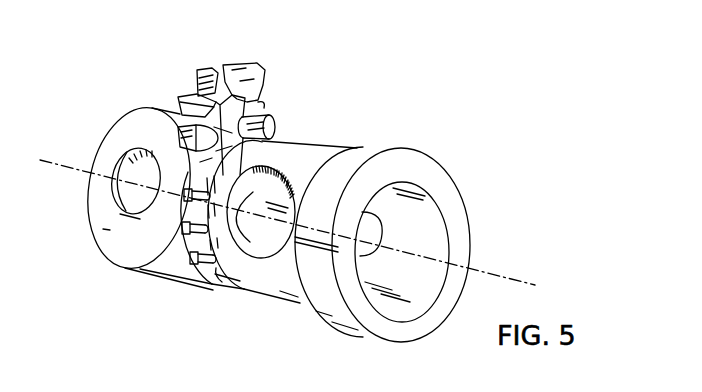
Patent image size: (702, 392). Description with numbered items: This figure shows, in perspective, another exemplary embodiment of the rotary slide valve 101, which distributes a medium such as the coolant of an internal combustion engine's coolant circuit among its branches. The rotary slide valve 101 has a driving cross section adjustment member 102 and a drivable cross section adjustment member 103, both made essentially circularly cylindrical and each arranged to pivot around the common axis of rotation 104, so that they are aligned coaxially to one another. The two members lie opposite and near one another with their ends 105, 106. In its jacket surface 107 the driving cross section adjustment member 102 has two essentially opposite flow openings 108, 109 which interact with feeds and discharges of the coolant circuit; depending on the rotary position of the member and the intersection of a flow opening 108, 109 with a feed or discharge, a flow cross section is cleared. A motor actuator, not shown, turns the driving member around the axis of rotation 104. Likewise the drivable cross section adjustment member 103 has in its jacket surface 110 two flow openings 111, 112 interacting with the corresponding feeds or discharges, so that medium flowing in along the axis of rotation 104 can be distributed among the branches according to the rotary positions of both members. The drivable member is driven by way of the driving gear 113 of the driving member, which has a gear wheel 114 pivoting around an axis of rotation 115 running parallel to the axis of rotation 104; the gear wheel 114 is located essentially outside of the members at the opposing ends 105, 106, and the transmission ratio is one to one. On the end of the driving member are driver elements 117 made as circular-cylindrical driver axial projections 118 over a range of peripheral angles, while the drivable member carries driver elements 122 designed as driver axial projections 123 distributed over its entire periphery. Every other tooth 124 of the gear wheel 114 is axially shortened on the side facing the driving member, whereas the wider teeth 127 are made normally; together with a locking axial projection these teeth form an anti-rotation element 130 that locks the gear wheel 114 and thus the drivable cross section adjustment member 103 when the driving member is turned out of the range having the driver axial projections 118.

The rotary slide valve 101 is at (483, 135).
The driving cross section adjustment member 102 is at (383, 160).
The drivable cross section adjustment member 103 is at (128, 249).
The axis of rotation 104 is at (512, 278).
The end 105 is at (283, 308).
The end 106 is at (206, 302).
The jacket surface 107 is at (318, 153).
The flow opening 108 is at (374, 230).
The flow opening 109 is at (262, 243).
The jacket surface 110 is at (103, 233).
The flow opening 111 is at (118, 205).
The flow opening 112 is at (242, 238).
The driving gear 113 is at (218, 61).
The gear wheel 114 is at (262, 81).
The axis of rotation 115 is at (164, 104).
The driver elements 117 is at (200, 240).
The driver axial projections 118 is at (209, 270).
The driver elements 122 is at (182, 208).
The driver axial projections 123 is at (188, 232).
The tooth 124 is at (182, 135).
The wider teeth 127 is at (205, 162).
The anti-rotation element 130 is at (285, 112).